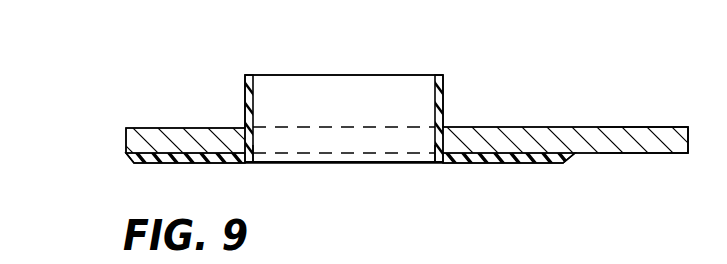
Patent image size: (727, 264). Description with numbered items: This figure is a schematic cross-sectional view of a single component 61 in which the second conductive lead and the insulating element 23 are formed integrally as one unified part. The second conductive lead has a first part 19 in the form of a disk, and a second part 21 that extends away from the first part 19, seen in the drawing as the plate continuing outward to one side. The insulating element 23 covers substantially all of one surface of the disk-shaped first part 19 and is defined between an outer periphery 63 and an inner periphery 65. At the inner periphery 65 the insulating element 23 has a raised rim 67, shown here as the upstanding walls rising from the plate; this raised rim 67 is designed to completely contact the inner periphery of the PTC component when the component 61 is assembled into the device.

The single component 61 is at (586, 74).
The outer periphery 63 is at (126, 143).
The first part 19 is at (177, 152).
The second part 21 is at (637, 153).
The insulating element 23 is at (495, 163).
The inner periphery 65 is at (255, 145).
The raised rim 67 is at (245, 88).